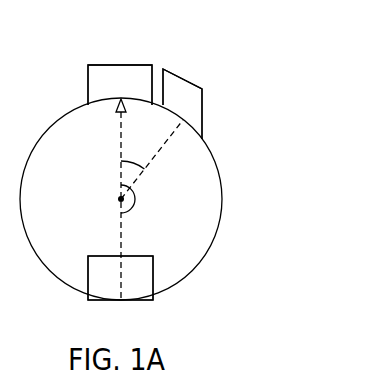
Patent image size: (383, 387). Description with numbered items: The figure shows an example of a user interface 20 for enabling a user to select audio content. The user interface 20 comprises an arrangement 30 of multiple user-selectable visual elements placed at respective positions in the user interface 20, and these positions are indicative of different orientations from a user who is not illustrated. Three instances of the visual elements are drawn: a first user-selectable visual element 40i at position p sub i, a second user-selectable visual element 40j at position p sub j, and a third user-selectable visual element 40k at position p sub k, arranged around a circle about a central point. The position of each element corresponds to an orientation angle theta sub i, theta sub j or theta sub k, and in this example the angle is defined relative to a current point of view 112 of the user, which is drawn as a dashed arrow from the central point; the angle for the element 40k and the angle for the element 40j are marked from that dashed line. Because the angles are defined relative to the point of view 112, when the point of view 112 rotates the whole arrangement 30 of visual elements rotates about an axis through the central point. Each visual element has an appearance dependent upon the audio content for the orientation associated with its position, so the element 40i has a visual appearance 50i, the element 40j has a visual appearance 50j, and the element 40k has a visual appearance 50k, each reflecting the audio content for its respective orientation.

The user interface 20 is at (273, 139).
The arrangement 30 is at (243, 170).
The point of view 112 is at (118, 168).
The user-selectable visual element 40i is at (112, 65).
The visual appearance 50i is at (143, 78).
The user-selectable visual element 40k is at (181, 79).
The visual appearance 50k is at (202, 110).
The user-selectable visual element 40j is at (108, 300).
The visual appearance 50j is at (153, 276).